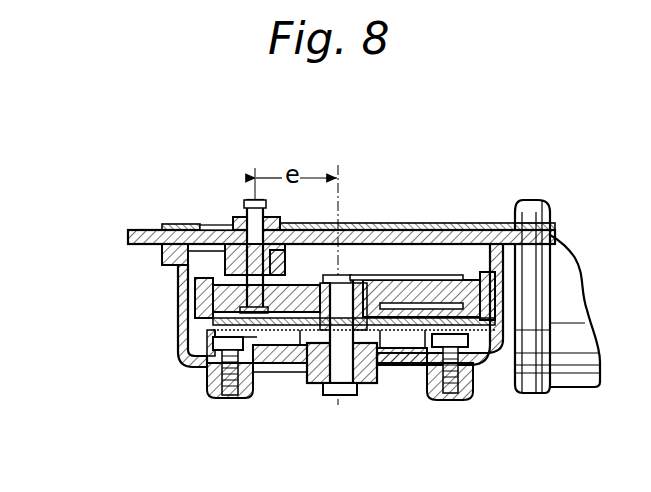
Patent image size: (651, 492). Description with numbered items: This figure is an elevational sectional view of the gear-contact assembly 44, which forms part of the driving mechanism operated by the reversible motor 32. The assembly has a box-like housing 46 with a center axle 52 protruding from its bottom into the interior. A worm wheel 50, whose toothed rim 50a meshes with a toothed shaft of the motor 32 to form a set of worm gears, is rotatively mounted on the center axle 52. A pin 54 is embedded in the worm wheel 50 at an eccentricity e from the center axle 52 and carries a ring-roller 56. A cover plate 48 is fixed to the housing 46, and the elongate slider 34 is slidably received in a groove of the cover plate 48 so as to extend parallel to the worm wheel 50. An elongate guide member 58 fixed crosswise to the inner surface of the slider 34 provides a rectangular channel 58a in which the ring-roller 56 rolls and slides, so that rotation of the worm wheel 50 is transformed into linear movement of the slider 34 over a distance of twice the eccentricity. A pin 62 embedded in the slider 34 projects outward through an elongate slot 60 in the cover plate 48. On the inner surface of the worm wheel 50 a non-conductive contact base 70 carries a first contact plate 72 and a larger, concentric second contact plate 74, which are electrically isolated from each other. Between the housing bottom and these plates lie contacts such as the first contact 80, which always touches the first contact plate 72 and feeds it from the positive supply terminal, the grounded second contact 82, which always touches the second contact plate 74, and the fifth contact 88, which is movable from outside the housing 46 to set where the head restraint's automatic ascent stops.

The reversible motor 32 is at (586, 350).
The elongate slider 34 is at (140, 230).
The gear-contact assembly 44 is at (372, 392).
The box-like housing 46 is at (186, 356).
The cover plate 48 is at (184, 224).
The worm wheel 50 is at (420, 302).
The toothed rim 50a is at (520, 291).
The center axle 52 is at (340, 400).
The pin 54 is at (236, 217).
The ring-roller 56 is at (286, 266).
The elongate guide member 58 is at (226, 262).
The channel 58a is at (226, 252).
The elongate slot 60 is at (406, 223).
The pin 62 is at (238, 217).
The contact base 70 is at (274, 350).
The first contact plate 72 is at (264, 352).
The second contact plate 74 is at (213, 330).
The first contact 80 is at (403, 368).
The second contact 82 is at (480, 375).
The fifth contact 88 is at (250, 394).